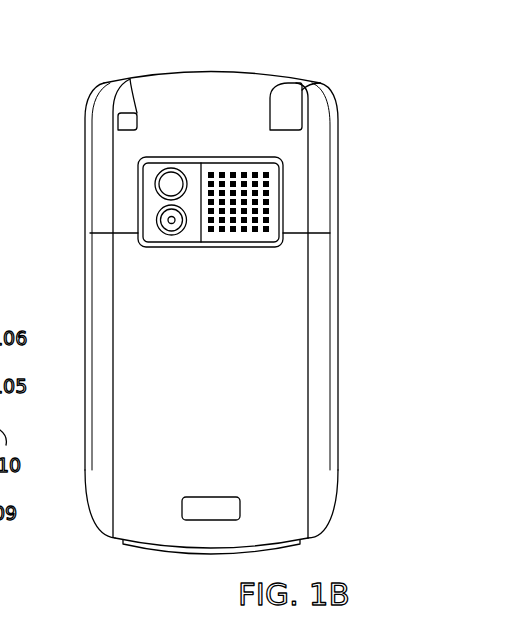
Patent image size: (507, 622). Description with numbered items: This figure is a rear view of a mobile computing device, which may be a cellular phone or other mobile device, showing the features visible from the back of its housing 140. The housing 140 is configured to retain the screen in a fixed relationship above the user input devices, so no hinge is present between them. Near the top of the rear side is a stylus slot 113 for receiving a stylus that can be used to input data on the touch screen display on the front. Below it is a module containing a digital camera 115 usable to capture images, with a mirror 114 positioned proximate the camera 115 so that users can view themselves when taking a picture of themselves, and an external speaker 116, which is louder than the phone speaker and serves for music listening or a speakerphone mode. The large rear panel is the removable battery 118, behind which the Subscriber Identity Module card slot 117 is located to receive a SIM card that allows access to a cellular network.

The stylus slot 113 is at (110, 72).
The mirror 114 is at (149, 183).
The digital camera 115 is at (156, 236).
The external speaker 116 is at (277, 198).
The Subscriber Identity Module (SIM) card slot 117 is at (289, 453).
The removable battery 118 is at (208, 530).
The housing 140 is at (76, 535).